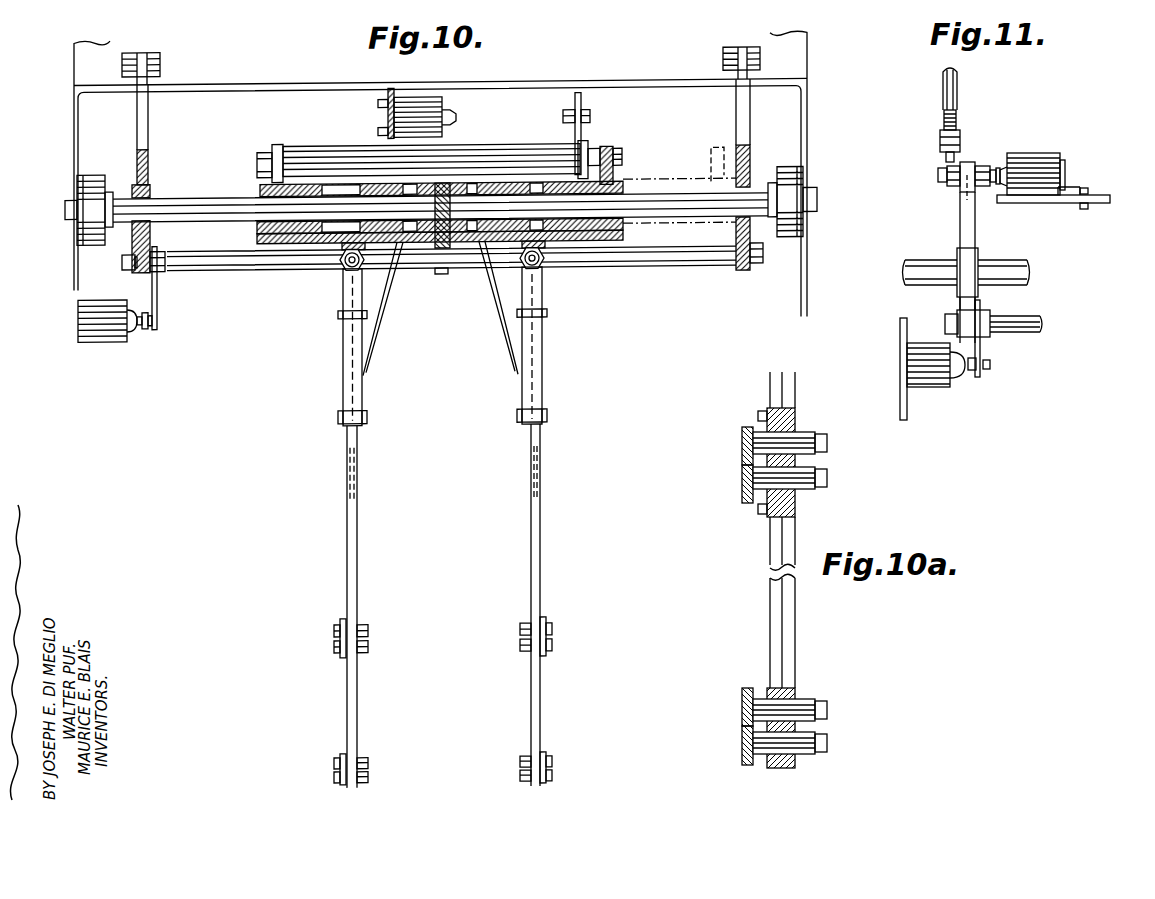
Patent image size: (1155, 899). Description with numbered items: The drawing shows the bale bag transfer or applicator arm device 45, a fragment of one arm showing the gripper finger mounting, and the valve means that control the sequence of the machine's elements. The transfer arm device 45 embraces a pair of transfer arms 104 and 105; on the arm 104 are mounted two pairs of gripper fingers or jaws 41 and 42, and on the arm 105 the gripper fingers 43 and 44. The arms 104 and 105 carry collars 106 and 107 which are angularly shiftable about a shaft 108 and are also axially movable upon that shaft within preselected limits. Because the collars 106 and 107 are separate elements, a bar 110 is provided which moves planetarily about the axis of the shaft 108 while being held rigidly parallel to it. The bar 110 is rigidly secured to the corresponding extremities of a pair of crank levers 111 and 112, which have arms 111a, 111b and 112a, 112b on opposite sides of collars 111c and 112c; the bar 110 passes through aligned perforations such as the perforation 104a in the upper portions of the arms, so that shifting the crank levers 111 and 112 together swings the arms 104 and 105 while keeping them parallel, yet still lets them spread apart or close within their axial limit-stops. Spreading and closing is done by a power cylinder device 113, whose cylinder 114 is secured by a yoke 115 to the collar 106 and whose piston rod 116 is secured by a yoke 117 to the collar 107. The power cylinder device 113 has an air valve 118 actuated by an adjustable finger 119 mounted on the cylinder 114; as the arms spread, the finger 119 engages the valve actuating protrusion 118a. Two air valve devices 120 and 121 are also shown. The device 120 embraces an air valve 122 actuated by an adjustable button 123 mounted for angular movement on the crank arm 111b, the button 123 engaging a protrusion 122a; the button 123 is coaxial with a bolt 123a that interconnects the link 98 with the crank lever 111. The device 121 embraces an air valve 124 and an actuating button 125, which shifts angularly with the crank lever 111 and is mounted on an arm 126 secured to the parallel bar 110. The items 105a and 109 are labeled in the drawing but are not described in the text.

In FIG. 10, the gripper fingers 41 is at (338, 646).
In FIG. 10A, the gripper fingers 41 is at (742, 478).
In FIG. 10, the gripper fingers 42 is at (338, 776).
In FIG. 10A, the gripper fingers 42 is at (742, 742).
In FIG. 10, the gripper fingers 43 is at (550, 646).
In FIG. 10, the gripper fingers 44 is at (550, 776).
In FIG. 10, the transfer arm device 45 is at (417, 527).
In FIG. 11, the link 98 is at (957, 75).
In FIG. 10, the transfer arm 104 is at (329, 529).
In FIG. 10, the perforation 104a is at (345, 272).
In FIG. 10, the transfer arm 105 is at (556, 526).
In FIG. 10, the pivot pin 105a is at (540, 271).
In FIG. 10, the collar 106 is at (283, 236).
In FIG. 10, the collar 107 is at (503, 235).
In FIG. 10, the shaft 108 is at (217, 194).
In FIG. 11, the shaft 109 is at (1010, 259).
In FIG. 11, the bar 110 is at (1010, 316).
In FIG. 10, the crank lever 111 is at (153, 179).
In FIG. 10, the crank arm 111a is at (150, 238).
In FIG. 11, the crank arm 111a is at (962, 309).
In FIG. 10, the crank arm 111b is at (150, 152).
In FIG. 11, the crank arm 111b is at (960, 220).
In FIG. 10, the collar 111c is at (149, 188).
In FIG. 10, the crank lever 112 is at (736, 188).
In FIG. 10, the crank arm 112a is at (737, 240).
In FIG. 10, the crank arm 112b is at (738, 113).
In FIG. 10, the collar 112c is at (750, 178).
In FIG. 10, the power cylinder device 113 is at (337, 127).
In FIG. 10, the cylinder 114 is at (557, 139).
In FIG. 10, the yoke 115 is at (276, 147).
In FIG. 10, the piston rod 116 is at (623, 157).
In FIG. 10, the yoke 117 is at (609, 148).
In FIG. 10, the air valve 118 is at (430, 112).
In FIG. 10, the valve actuating protrusion 118a is at (458, 118).
In FIG. 10, the adjustable finger 119 is at (563, 116).
In FIG. 11, the air valve device 120 is at (1056, 165).
In FIG. 10, the air valve device 121 is at (94, 309).
In FIG. 11, the air valve device 121 is at (964, 376).
In FIG. 11, the air valve 122 is at (1053, 158).
In FIG. 11, the protrusion 122a is at (1002, 166).
In FIG. 11, the adjustable button 123 is at (990, 165).
In FIG. 11, the bolt 123a is at (938, 180).
In FIG. 10, the air valve 124 is at (105, 339).
In FIG. 11, the air valve 124 is at (935, 385).
In FIG. 10, the actuating button 125 is at (142, 329).
In FIG. 11, the actuating button 125 is at (968, 370).
In FIG. 11, the arm 126 is at (982, 352).